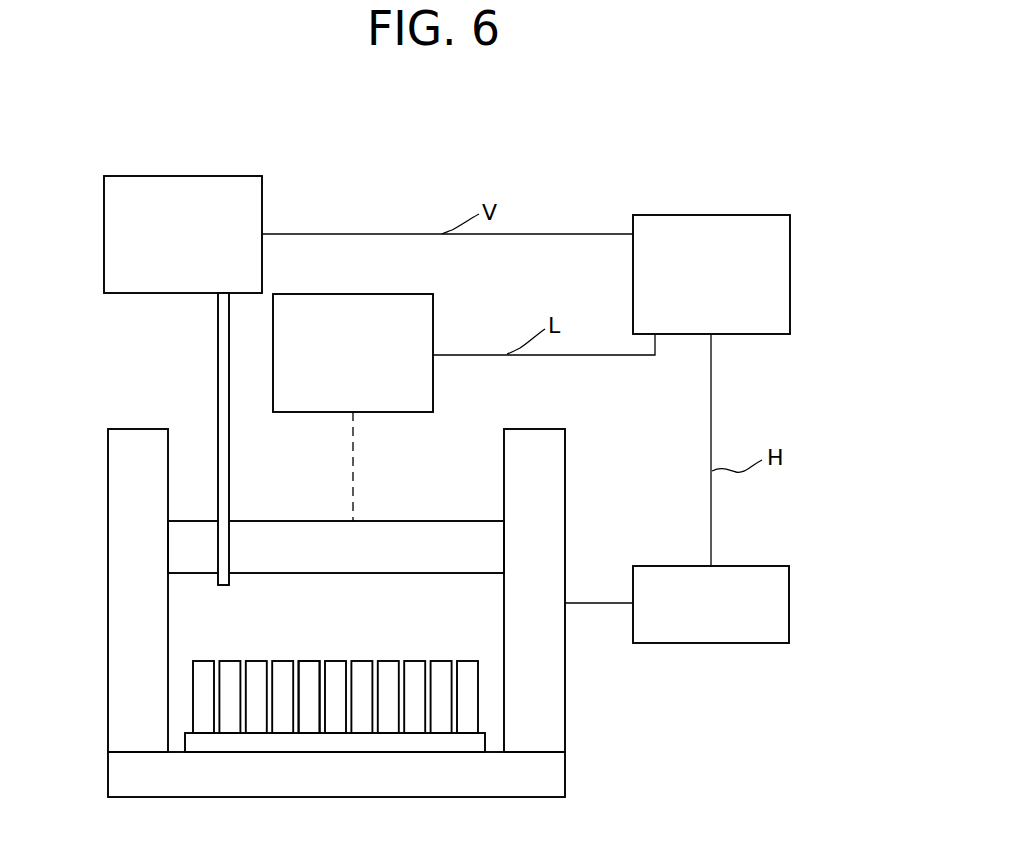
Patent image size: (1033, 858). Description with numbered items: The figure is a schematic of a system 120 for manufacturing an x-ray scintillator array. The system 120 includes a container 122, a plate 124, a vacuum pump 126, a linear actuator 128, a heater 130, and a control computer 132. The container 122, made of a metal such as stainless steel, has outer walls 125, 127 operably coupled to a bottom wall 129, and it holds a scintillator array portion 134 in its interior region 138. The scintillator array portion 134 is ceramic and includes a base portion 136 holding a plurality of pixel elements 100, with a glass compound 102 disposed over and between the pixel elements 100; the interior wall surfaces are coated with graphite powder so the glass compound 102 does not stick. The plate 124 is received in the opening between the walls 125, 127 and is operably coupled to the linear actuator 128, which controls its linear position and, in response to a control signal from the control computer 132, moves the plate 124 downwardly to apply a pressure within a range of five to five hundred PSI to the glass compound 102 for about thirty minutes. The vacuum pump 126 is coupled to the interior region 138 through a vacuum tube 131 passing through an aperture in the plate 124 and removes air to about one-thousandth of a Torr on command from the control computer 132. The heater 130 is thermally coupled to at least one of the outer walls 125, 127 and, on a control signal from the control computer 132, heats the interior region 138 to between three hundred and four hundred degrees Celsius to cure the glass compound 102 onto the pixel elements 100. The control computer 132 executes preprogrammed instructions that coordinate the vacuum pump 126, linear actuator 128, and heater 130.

The pixel elements 100 is at (233, 660).
The glass compound 102 is at (474, 617).
The system 120 is at (669, 176).
The container 122 is at (580, 735).
The plate 124 is at (398, 520).
The outer wall 125 is at (110, 531).
The vacuum pump 126 is at (183, 175).
The outer wall 127 is at (550, 515).
The linear actuator 128 is at (363, 293).
The bottom wall 129 is at (535, 803).
The heater 130 is at (790, 603).
The vacuum tube 131 is at (218, 362).
The control computer 132 is at (790, 274).
The scintillator array portion 134 is at (314, 650).
The base portion 136 is at (185, 744).
The interior region 138 is at (170, 618).